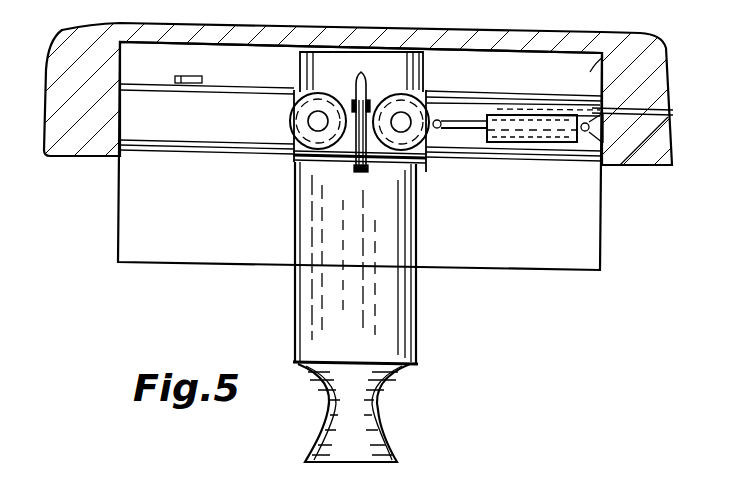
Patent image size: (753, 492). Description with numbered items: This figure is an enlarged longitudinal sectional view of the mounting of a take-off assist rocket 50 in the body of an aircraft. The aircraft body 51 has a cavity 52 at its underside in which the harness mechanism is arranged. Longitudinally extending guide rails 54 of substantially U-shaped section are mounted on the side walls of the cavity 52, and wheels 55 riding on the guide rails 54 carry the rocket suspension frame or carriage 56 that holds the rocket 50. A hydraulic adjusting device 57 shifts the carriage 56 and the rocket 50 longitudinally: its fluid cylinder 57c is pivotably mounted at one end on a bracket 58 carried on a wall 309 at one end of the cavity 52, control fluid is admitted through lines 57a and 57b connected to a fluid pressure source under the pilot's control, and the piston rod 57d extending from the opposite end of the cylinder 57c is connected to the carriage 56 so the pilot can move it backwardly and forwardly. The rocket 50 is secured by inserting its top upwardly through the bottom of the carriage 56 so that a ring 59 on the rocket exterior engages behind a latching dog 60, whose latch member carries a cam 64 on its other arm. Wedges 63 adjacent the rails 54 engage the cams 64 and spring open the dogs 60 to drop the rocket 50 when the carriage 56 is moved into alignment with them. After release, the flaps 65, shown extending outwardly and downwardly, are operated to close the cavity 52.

The rocket 50 is at (390, 307).
The aircraft body 51 is at (664, 52).
The cavity 52 is at (556, 80).
The guide rails 54 is at (168, 133).
The wheels 55 is at (413, 138).
The carriage 56 is at (335, 93).
The hydraulic adjusting device 57 is at (522, 142).
The line 57a is at (664, 103).
The line 57b is at (665, 133).
The fluid cylinder 57c is at (559, 126).
The piston rod 57d is at (478, 125).
The bracket 58 is at (597, 140).
The ring 59 is at (298, 162).
The latching dog 60 is at (360, 170).
The wedges 63 is at (176, 79).
The cam 64 is at (364, 77).
The flaps 65 is at (211, 44).
The wall 309 is at (582, 75).